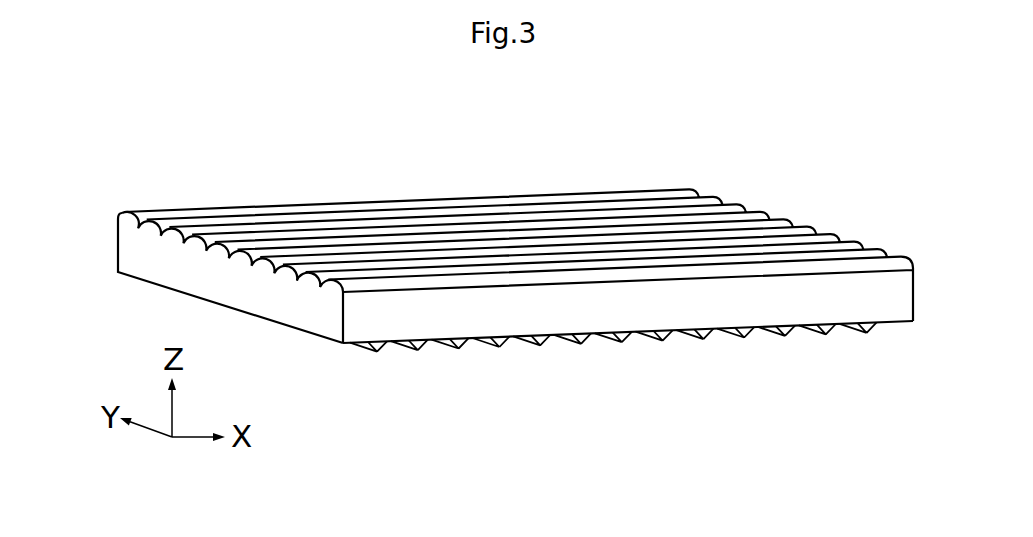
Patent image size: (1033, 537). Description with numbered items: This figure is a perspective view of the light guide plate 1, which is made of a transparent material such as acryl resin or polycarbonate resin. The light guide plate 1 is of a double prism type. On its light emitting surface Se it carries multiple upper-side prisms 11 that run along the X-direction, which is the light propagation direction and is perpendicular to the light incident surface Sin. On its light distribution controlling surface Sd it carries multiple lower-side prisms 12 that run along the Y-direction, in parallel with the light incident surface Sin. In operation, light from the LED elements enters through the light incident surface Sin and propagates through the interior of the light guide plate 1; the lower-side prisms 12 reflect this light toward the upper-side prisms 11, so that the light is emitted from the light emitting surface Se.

The light guide plate 1 is at (262, 185).
The light emitting surface Se is at (611, 182).
The upper-side prisms 11 is at (909, 253).
The lower-side prisms 12 is at (792, 337).
The light incident surface Sin is at (185, 281).
The light distribution controlling surface Sd is at (620, 361).